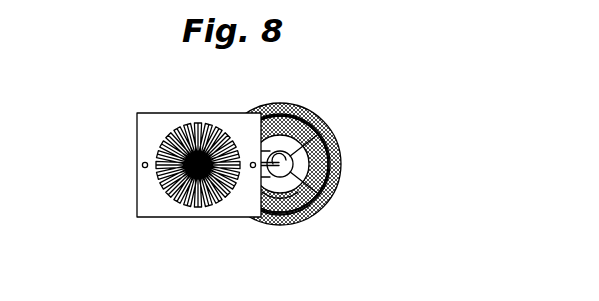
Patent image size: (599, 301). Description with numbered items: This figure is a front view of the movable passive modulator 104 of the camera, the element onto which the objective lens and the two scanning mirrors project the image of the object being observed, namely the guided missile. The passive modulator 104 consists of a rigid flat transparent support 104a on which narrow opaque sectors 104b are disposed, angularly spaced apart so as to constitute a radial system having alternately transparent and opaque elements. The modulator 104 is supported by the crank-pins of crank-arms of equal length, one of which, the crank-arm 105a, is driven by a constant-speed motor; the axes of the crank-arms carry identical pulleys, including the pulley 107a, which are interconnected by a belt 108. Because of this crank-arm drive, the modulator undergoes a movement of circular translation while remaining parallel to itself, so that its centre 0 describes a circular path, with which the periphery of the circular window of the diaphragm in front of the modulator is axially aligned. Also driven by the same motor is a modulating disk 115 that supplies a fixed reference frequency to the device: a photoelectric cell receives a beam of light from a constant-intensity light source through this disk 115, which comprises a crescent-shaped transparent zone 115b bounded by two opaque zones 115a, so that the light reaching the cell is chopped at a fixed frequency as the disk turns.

The passive modulator 104 is at (160, 135).
The rigid flat transparent support 104a is at (140, 137).
The narrow opaque sectors 104b is at (174, 134).
The centre of the modulator 0 is at (172, 188).
The belt 108 is at (286, 111).
The crank-arm 105a is at (337, 139).
The pulley 107a is at (318, 186).
The modulating disk 115 is at (291, 239).
The opaque zones 115a is at (313, 210).
The crescent-shaped transparent zone 115b is at (280, 212).